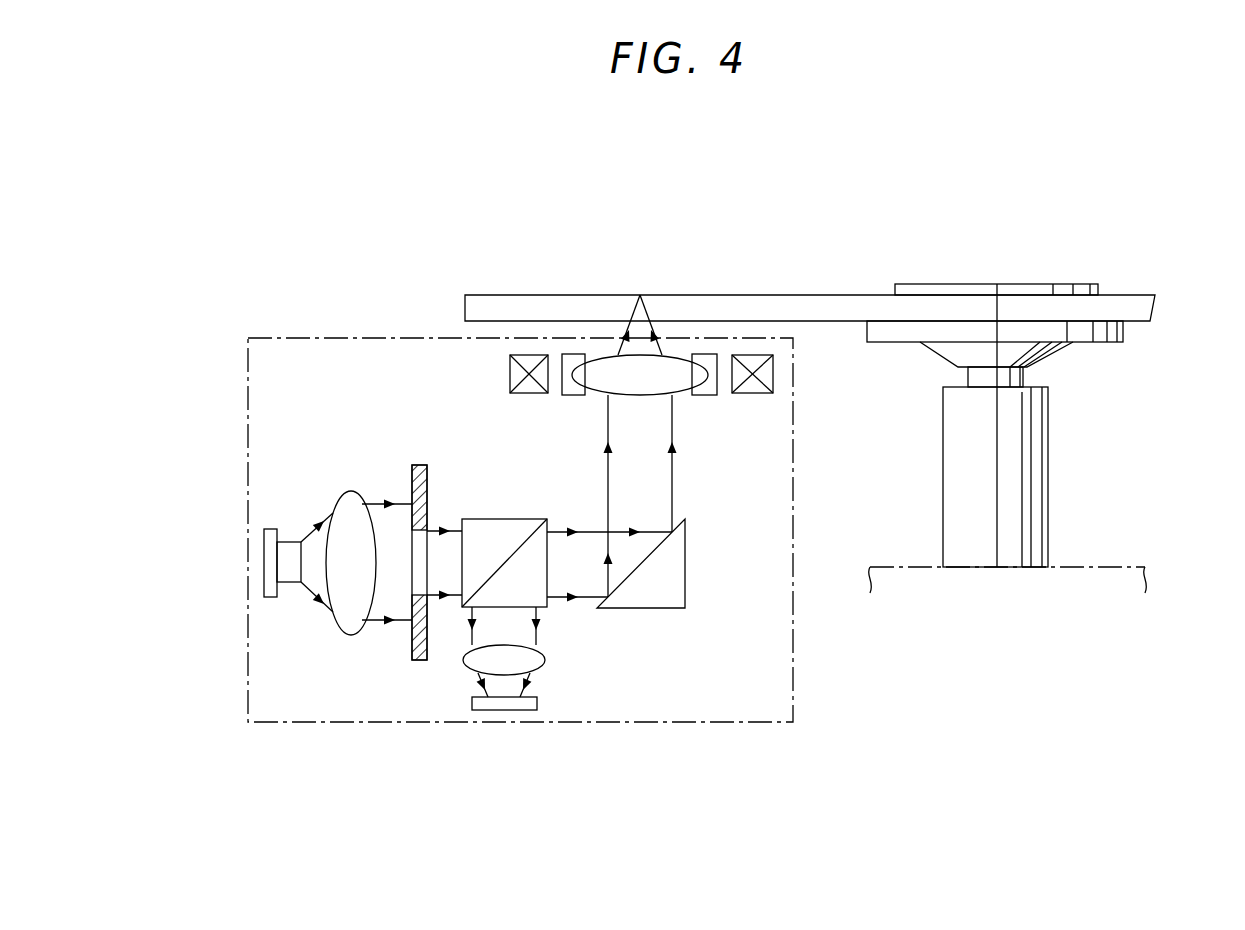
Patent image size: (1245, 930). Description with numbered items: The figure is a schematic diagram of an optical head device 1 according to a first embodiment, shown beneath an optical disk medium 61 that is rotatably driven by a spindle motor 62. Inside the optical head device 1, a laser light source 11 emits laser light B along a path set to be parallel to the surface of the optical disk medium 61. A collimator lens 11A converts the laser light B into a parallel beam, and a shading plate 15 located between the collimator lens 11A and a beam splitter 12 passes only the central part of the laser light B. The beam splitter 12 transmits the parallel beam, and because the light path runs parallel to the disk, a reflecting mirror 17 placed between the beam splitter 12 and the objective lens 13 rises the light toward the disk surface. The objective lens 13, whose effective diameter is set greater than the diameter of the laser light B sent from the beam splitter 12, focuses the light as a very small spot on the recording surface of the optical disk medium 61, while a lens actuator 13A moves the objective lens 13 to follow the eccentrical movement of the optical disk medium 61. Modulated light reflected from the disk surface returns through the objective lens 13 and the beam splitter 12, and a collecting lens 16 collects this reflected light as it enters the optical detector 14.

The optical head device 1 is at (248, 543).
The laser light source 11 is at (264, 576).
The collimator lens 11A is at (331, 512).
The laser light B is at (326, 597).
The beam splitter 12 is at (462, 607).
The objective lens 13 is at (673, 365).
The lens actuator 13A is at (517, 380).
The optical detector 14 is at (527, 705).
The shading plate 15 is at (412, 490).
The collecting lens 16 is at (545, 662).
The reflecting mirror 17 is at (685, 600).
The optical disk medium 61 is at (547, 295).
The spindle motor 62 is at (1045, 487).